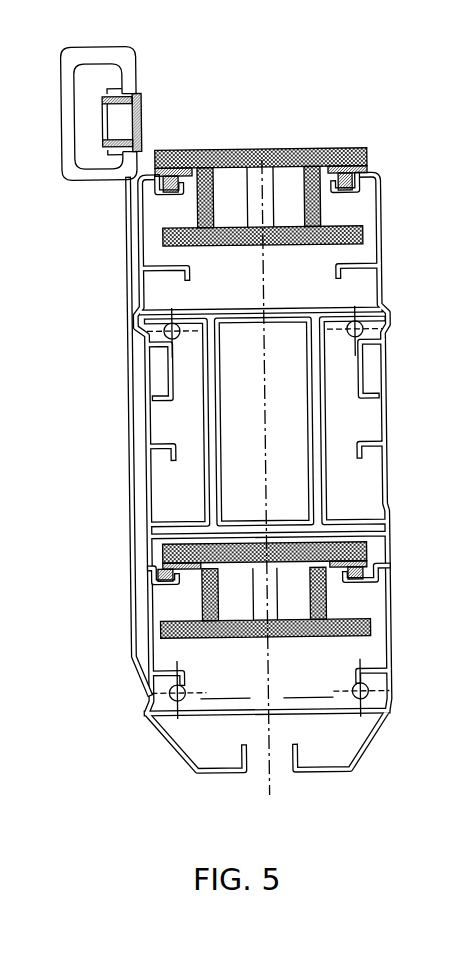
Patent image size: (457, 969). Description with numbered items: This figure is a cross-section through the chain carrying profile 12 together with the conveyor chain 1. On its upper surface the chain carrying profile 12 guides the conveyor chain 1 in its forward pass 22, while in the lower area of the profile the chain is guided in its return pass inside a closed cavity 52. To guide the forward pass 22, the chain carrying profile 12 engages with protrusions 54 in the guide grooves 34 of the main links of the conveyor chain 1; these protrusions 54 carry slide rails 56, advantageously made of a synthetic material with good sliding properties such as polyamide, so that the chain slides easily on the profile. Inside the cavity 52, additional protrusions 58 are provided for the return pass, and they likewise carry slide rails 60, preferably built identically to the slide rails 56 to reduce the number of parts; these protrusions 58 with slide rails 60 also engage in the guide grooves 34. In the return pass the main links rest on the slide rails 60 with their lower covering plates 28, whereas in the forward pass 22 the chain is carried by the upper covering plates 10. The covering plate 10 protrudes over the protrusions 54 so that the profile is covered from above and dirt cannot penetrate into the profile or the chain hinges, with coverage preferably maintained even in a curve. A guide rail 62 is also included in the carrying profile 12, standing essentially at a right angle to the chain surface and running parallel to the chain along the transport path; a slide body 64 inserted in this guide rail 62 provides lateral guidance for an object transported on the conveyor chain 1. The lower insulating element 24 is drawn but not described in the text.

The conveyor chain 1 is at (295, 148).
The upper covering plate 10 is at (340, 148).
The chain carrying profile 12 is at (388, 336).
The forward pass 22 is at (260, 127).
The insulating strip 24 is at (353, 640).
The lower covering plate 28 is at (322, 247).
The guide groove 34 is at (330, 210).
The closed cavity 52 is at (278, 665).
The protrusion 54 is at (357, 180).
The slide rail 56 is at (368, 170).
The additional protrusion 58 is at (370, 572).
The slide rail 60 is at (360, 583).
The guide rail 62 is at (138, 75).
The slide body 64 is at (142, 120).